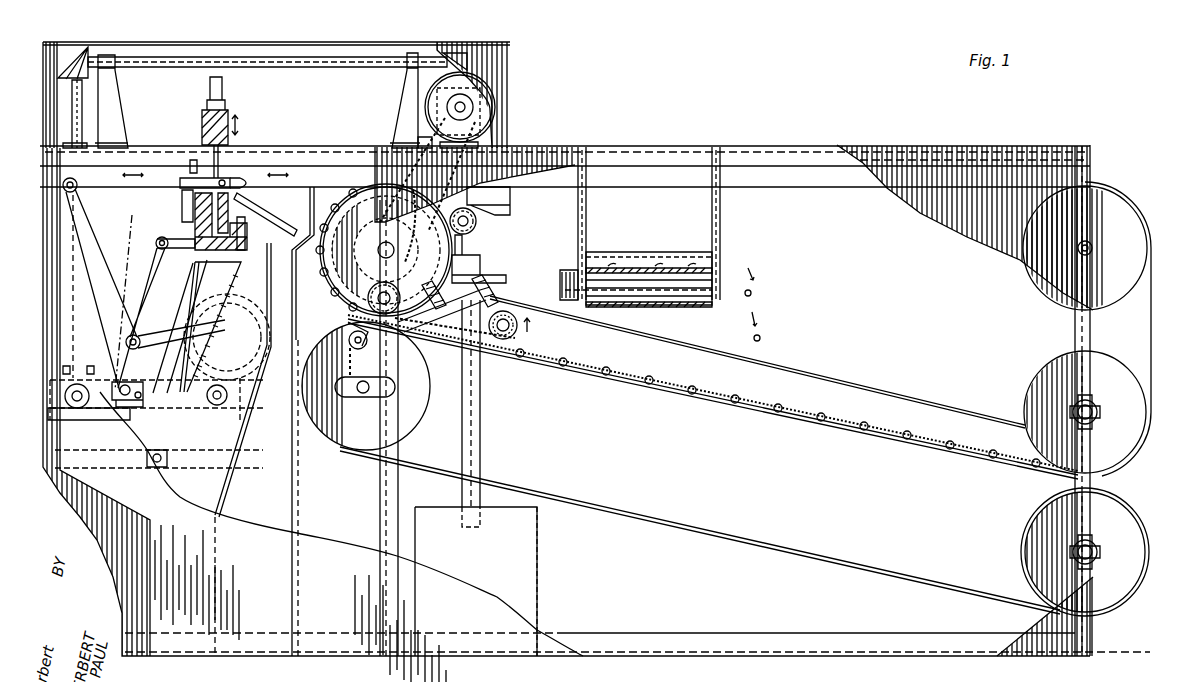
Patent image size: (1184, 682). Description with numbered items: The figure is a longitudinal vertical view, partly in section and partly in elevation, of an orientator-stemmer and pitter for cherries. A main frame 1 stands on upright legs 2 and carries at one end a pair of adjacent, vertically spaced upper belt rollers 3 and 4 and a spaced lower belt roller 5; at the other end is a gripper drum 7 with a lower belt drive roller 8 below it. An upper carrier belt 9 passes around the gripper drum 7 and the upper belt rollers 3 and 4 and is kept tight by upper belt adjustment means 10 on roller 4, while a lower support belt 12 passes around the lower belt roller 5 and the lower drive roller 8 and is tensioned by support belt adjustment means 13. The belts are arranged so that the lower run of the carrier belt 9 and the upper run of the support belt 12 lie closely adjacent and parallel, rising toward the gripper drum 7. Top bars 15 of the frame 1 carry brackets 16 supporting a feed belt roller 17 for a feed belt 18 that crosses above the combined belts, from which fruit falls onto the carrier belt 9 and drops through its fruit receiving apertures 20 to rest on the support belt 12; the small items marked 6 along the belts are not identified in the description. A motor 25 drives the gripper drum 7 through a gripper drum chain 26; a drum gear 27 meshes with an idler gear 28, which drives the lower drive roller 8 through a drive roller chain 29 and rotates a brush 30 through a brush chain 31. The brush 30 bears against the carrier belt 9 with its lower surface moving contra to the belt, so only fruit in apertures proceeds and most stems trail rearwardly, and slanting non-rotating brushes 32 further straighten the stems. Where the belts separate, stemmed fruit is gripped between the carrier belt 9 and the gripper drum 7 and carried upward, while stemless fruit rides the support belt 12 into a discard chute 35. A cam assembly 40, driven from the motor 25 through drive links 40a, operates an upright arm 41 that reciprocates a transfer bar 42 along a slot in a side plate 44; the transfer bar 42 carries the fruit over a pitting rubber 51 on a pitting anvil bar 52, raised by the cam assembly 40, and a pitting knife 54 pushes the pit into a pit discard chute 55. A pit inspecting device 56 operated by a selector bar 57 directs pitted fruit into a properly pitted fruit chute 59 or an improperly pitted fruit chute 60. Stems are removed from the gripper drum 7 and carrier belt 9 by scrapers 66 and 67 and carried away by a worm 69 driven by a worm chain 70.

The main frame 1 is at (250, 575).
The upright legs 2 is at (1097, 480).
The upper belt roller 3 is at (1105, 200).
The upper belt roller 4 is at (1062, 362).
The lower belt roller 5 is at (1065, 507).
The articles on conveyor 6 is at (701, 340).
The gripper drum 7 is at (474, 257).
The lower belt drive roller 8 is at (410, 413).
The upper carrier belt 9 is at (752, 190).
The upper belt adjustment means 10 is at (1072, 410).
The lower support belt 12 is at (730, 532).
The support belt adjustment means 13 is at (1100, 550).
The top bars 15 is at (793, 146).
The brackets 16 is at (710, 208).
The feed belt roller 17 is at (693, 286).
The feed belt 18 is at (640, 268).
The fruit receiving apertures 20 is at (927, 432).
The motor 25 is at (490, 105).
The gripper drum chain 26 is at (470, 133).
The drum gear 27 is at (372, 238).
The idler gear 28 is at (398, 288).
The drive roller chain 29 is at (354, 314).
The brush 30 is at (503, 340).
The brush chain 31 is at (495, 300).
The slanting non-rotating brushes 32 is at (428, 325).
The discard chute 35 is at (253, 511).
The cam assembly 40 is at (175, 318).
The drive links 40a is at (72, 118).
The upright arm 41 is at (108, 252).
The transfer bar 42 is at (185, 178).
The side plate 44 is at (330, 172).
The pitting rubber 51 is at (240, 178).
The pitting anvil bar 52 is at (195, 210).
The pitting knife 54 is at (211, 160).
The pit discard chute 55 is at (193, 288).
The pit inspecting device 56 is at (238, 262).
The selector bar 57 is at (168, 238).
The properly pitted fruit chute 59 is at (262, 301).
The improperly pitted fruit chute 60 is at (254, 380).
The scraper 66 is at (412, 243).
The scraper 67 is at (492, 185).
The worm 69 is at (478, 219).
The worm chain 70 is at (478, 230).